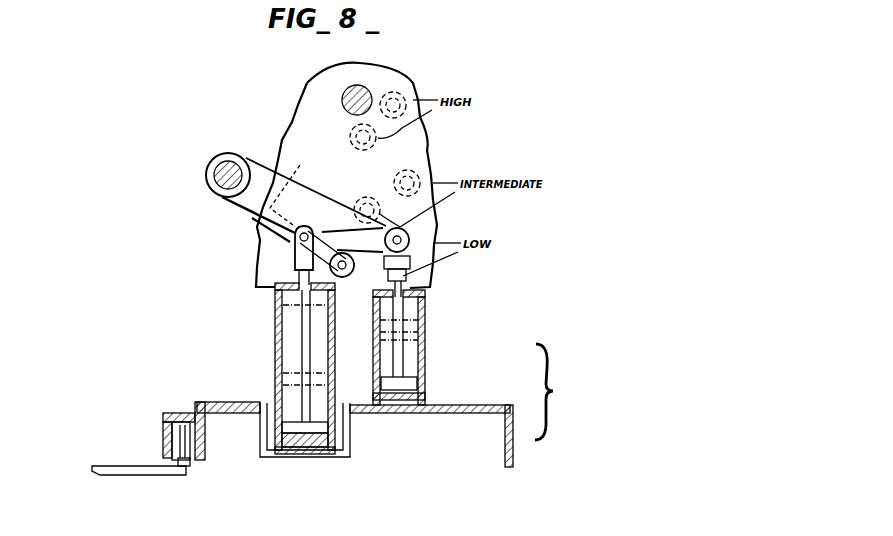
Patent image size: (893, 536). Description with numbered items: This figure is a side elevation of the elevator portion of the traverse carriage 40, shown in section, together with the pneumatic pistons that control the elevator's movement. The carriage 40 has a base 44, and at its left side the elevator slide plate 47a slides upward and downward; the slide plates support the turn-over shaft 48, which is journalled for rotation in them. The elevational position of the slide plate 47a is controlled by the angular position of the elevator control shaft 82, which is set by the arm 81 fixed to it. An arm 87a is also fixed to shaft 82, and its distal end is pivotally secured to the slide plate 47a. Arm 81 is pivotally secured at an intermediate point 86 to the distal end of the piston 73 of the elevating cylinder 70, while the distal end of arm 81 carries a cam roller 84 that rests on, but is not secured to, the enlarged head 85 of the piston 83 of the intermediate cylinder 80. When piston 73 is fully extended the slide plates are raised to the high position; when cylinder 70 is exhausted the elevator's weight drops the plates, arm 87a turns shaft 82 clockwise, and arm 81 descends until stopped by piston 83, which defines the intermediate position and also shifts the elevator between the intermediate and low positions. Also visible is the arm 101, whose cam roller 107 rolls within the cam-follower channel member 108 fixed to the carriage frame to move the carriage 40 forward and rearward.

The traverse carriage 40 is at (561, 392).
The base 44 is at (505, 440).
The elevator slide plate 47a is at (300, 122).
The turn-over shaft 48 is at (343, 96).
The elevating cylinder 70 is at (276, 350).
The piston 73 is at (301, 318).
The intermediate cylinder 80 is at (426, 350).
The arm 81 is at (257, 219).
The elevator control shaft 82 is at (220, 185).
The piston 83 is at (420, 300).
The cam roller 84 is at (404, 230).
The enlarged head 85 is at (411, 263).
The intermediate point 86 is at (316, 202).
The arm 87a is at (262, 265).
The arm 101 is at (117, 476).
The cam roller 107 is at (180, 437).
The cam-follower channel member 108 is at (170, 412).